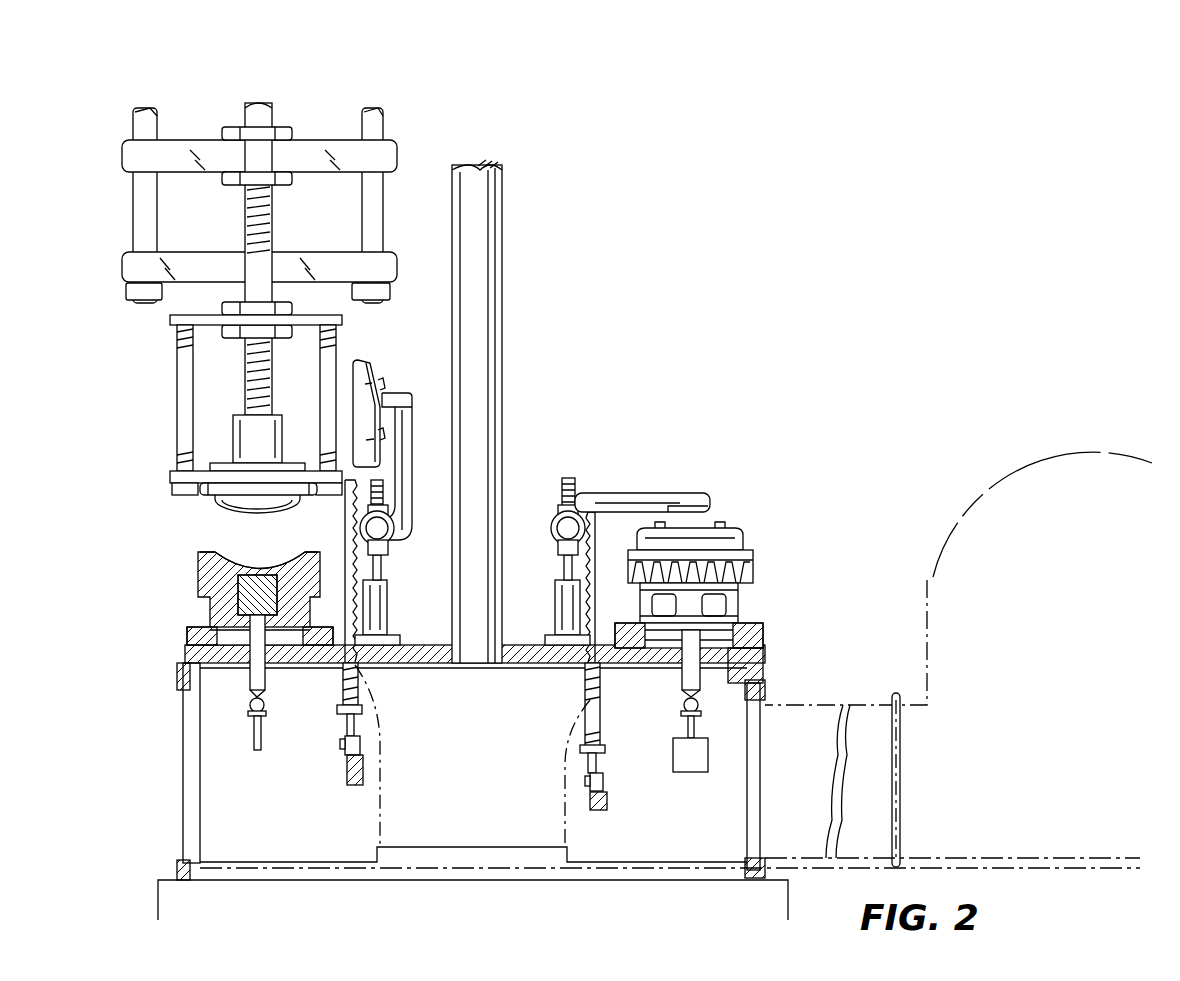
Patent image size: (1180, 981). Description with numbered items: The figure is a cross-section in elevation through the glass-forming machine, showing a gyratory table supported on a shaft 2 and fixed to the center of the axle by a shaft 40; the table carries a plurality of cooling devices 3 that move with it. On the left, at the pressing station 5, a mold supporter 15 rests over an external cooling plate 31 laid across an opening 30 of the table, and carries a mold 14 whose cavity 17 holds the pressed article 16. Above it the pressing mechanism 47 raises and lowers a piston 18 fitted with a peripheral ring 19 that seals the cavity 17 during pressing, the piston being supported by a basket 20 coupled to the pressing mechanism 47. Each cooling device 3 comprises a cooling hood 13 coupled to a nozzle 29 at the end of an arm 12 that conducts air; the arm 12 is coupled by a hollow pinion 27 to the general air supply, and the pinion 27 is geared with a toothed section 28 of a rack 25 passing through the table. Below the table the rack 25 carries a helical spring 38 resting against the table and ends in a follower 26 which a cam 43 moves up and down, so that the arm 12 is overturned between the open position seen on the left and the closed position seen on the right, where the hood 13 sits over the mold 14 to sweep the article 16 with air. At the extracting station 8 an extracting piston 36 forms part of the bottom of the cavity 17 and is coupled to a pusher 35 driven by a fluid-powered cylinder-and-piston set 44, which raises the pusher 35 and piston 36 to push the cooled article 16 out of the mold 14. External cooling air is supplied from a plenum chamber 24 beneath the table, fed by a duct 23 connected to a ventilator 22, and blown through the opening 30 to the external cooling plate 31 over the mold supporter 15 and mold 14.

The shaft 2 is at (567, 852).
The cooling device 3 is at (376, 380).
The pressing station 5 is at (240, 694).
The extracting station 8 is at (752, 656).
The arm 12 is at (412, 426).
The cooling hood 13 is at (367, 362).
The mold 14 is at (752, 565).
The mold supporter 15 is at (740, 603).
The article 16 is at (232, 556).
The cavity 17 is at (290, 556).
The piston 18 is at (232, 510).
The peripheral ring 19 is at (200, 492).
The basket 20 is at (180, 466).
The ventilator 22 is at (1130, 464).
The duct 23 is at (856, 860).
The plenum chamber 24 is at (262, 826).
The rack 25 is at (368, 588).
The follower 26 is at (361, 745).
The hollow pinion 27 is at (393, 548).
The toothed section 28 is at (357, 484).
The nozzle 29 is at (710, 498).
The opening 30 is at (665, 670).
The external cooling plate 31 is at (765, 641).
The pusher 35 is at (266, 690).
The extracting piston 36 is at (240, 600).
The helical spring 38 is at (585, 690).
The shaft 40 is at (488, 393).
The cam 43 is at (341, 770).
The fluid-powered cylinder-and-piston set 44 is at (262, 738).
The pressing mechanism 47 is at (245, 392).